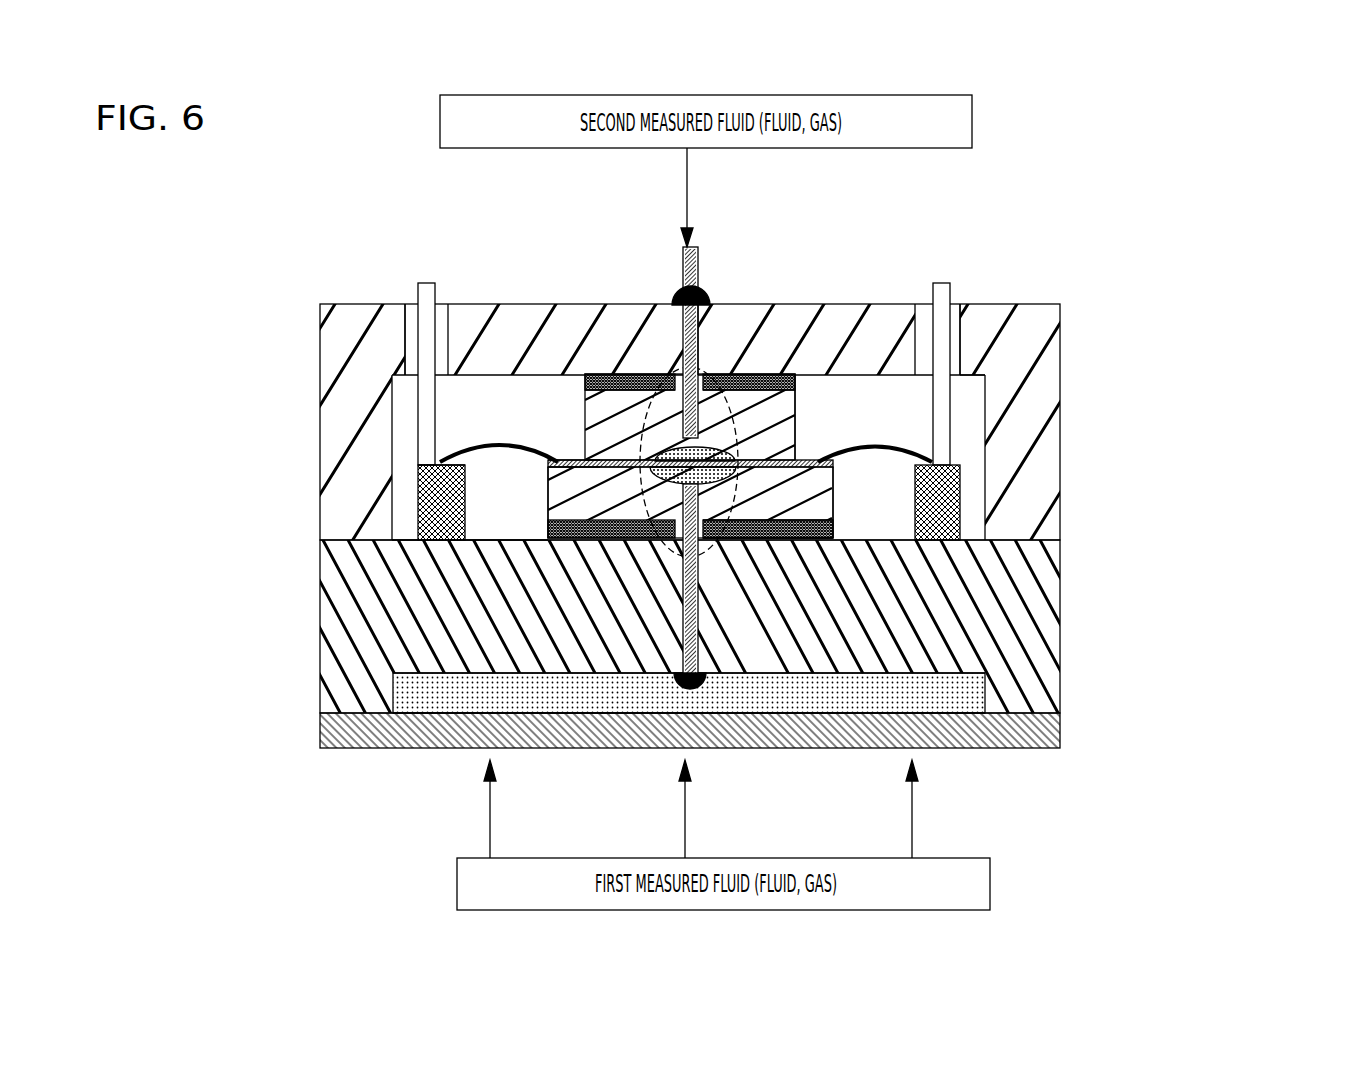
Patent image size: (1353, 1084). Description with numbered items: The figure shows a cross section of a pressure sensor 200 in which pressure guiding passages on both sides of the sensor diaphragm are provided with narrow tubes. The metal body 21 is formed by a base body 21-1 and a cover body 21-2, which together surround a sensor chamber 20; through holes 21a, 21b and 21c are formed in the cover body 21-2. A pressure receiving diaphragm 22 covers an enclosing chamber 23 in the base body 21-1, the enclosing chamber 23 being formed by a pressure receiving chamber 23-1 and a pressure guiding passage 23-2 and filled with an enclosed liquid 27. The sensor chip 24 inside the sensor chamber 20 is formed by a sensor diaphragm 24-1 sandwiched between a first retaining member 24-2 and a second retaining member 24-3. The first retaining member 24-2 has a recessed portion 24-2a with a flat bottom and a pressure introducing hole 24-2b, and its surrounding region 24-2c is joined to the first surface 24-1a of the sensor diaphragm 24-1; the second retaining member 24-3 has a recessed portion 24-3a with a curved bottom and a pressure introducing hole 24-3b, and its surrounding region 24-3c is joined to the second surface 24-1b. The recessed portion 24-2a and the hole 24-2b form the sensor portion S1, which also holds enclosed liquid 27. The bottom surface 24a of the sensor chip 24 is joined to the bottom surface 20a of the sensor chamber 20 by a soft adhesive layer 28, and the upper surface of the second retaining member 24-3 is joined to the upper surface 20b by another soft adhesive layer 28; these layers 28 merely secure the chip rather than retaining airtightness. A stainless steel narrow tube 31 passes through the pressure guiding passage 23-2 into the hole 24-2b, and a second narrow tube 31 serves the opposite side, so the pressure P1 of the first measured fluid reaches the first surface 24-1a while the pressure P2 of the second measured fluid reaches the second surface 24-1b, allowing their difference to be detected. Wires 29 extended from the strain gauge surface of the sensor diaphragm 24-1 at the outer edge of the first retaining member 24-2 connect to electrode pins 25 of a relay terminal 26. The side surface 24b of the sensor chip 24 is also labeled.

The pressure sensor 200 is at (1308, 263).
The sensor chamber 20 is at (895, 408).
The bottom surface of the sensor chamber 20a is at (478, 541).
The upper surface of the sensor chamber 20b is at (922, 425).
The body 21 is at (212, 445).
The base body 21-1 is at (357, 653).
The cover body 21-2 is at (355, 456).
The through hole 21a is at (417, 328).
The through hole 21b is at (955, 330).
The through hole 21c is at (705, 360).
The pressure receiving diaphragm 22 is at (320, 749).
The enclosing chamber 23 is at (537, 762).
The pressure receiving chamber 23-1 is at (663, 705).
The pressure guiding passage 23-2 is at (622, 672).
The sensor chip 24 is at (1242, 360).
The sensor diaphragm 24-1 is at (840, 480).
The first surface of the sensor diaphragm 24-1a is at (558, 488).
The second surface of the sensor diaphragm 24-1b is at (600, 458).
The first retaining member 24-2 is at (845, 535).
The recessed portion of the first retaining member 24-2a is at (733, 545).
The pressure introducing hole of the first retaining member 24-2b is at (730, 740).
The surrounding region of the recessed portion 24-2c is at (855, 560).
The second retaining member 24-3 is at (795, 435).
The recessed portion of the second retaining member 24-3a is at (745, 392).
The pressure introducing hole of the second retaining member 24-3b is at (655, 380).
The surrounding region of the recessed portion 24-3c is at (645, 400).
The bottom surface of the sensor chip 24a is at (548, 530).
The sensor chip side surface 24b is at (797, 380).
The electrode pin 25 is at (423, 297).
The relay terminal 26 is at (437, 450).
The enclosed liquid 27 is at (940, 692).
The adhesive layer 28 is at (730, 446).
The wires 29 is at (455, 447).
The narrow tube 31 is at (683, 283).
The sensor portion S1 is at (815, 405).
The pressure of the first measured fluid P1 is at (701, 809).
The pressure of the second measured fluid P2 is at (704, 197).